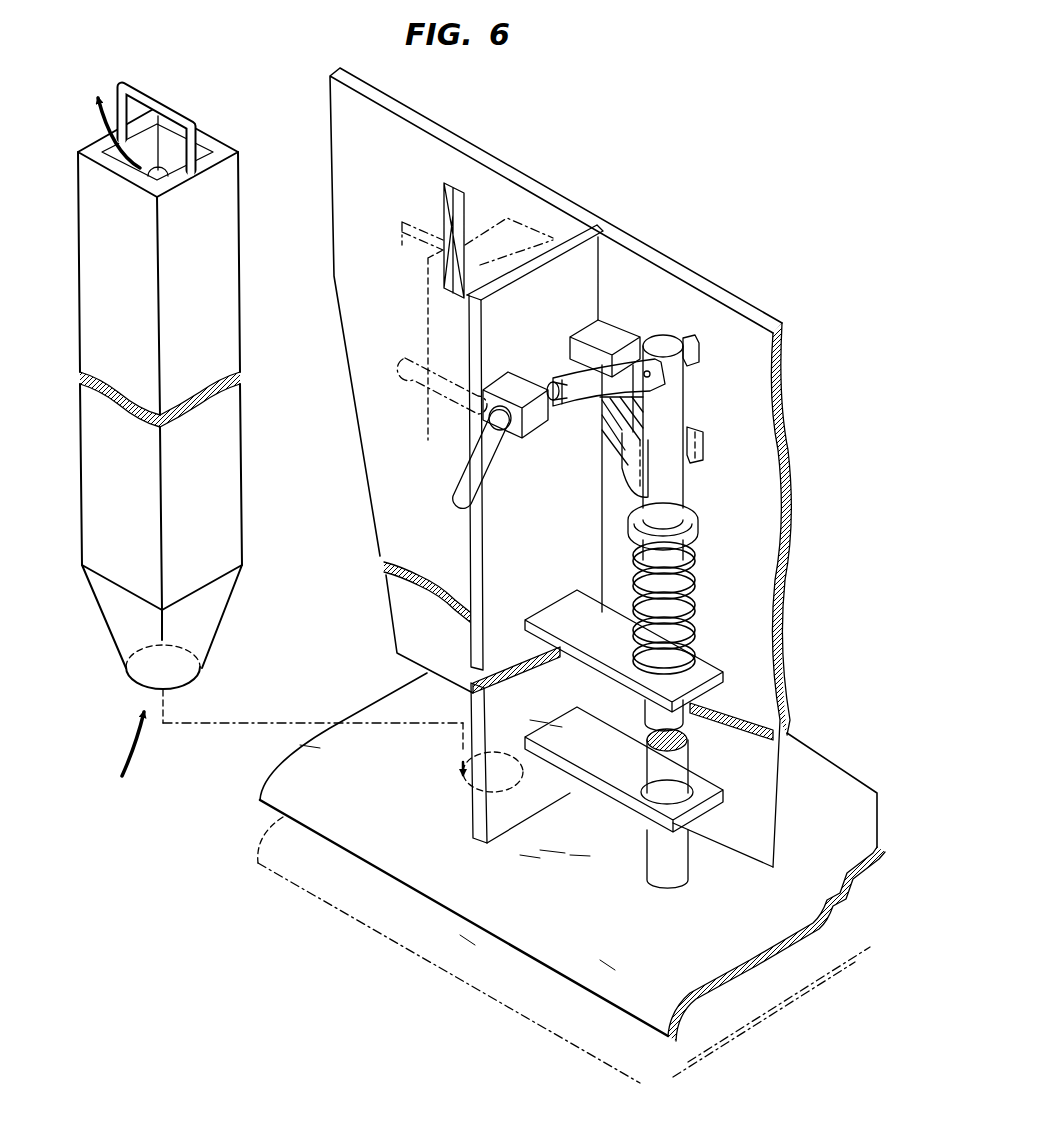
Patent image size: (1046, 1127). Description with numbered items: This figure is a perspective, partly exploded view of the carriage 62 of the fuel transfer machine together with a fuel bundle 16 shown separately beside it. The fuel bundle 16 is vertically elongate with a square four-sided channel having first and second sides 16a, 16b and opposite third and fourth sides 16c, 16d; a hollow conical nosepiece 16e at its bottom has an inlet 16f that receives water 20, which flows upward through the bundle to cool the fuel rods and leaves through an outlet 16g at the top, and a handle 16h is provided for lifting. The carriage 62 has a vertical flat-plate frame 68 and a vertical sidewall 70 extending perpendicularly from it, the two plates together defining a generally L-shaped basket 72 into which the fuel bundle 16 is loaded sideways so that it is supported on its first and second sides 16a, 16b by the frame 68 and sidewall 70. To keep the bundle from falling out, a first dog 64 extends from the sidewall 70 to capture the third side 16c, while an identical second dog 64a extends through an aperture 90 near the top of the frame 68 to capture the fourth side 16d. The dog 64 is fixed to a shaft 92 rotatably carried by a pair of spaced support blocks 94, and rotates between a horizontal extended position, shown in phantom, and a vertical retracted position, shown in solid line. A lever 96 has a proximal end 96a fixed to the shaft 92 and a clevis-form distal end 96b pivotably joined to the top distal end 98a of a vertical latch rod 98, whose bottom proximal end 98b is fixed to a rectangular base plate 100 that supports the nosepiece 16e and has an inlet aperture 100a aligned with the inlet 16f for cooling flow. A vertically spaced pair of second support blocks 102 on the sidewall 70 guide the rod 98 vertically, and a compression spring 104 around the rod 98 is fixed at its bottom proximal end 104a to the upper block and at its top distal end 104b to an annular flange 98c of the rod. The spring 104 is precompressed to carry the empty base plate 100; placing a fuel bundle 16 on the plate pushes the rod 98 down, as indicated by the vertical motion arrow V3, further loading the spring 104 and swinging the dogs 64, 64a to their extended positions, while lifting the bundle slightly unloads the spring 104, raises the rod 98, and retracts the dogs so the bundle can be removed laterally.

The fuel bundle 16 is at (271, 368).
The first side 16a is at (216, 140).
The second side 16b is at (220, 200).
The third side 16c is at (132, 278).
The fourth side 16d is at (110, 160).
The nosepiece 16e is at (222, 618).
The inlet 16f is at (200, 680).
The outlet 16g is at (166, 170).
The handle 16h is at (166, 92).
The water 20 is at (110, 95).
The carriage 62 is at (405, 598).
The first dog 64 is at (490, 465).
The second dog 64a is at (432, 230).
The frame 68 is at (345, 345).
The sidewall 70 is at (590, 243).
The basket 72 is at (556, 222).
The aperture 90 is at (443, 195).
The shaft 92 is at (558, 410).
The support blocks 94 is at (510, 382).
The lever 96 is at (620, 340).
The proximal end 96a is at (592, 325).
The distal end 96b is at (700, 352).
The latch rod 98 is at (693, 533).
The distal end 98a is at (680, 371).
The proximal end 98b is at (697, 868).
The annular flange 98c is at (688, 514).
The base plate 100 is at (750, 1012).
The inlet aperture 100a is at (473, 778).
The second support blocks 102 is at (560, 720).
The compression spring 104 is at (700, 553).
The proximal end 104a is at (640, 655).
The distal end 104b is at (640, 562).
The vertical velocity V3 is at (612, 848).